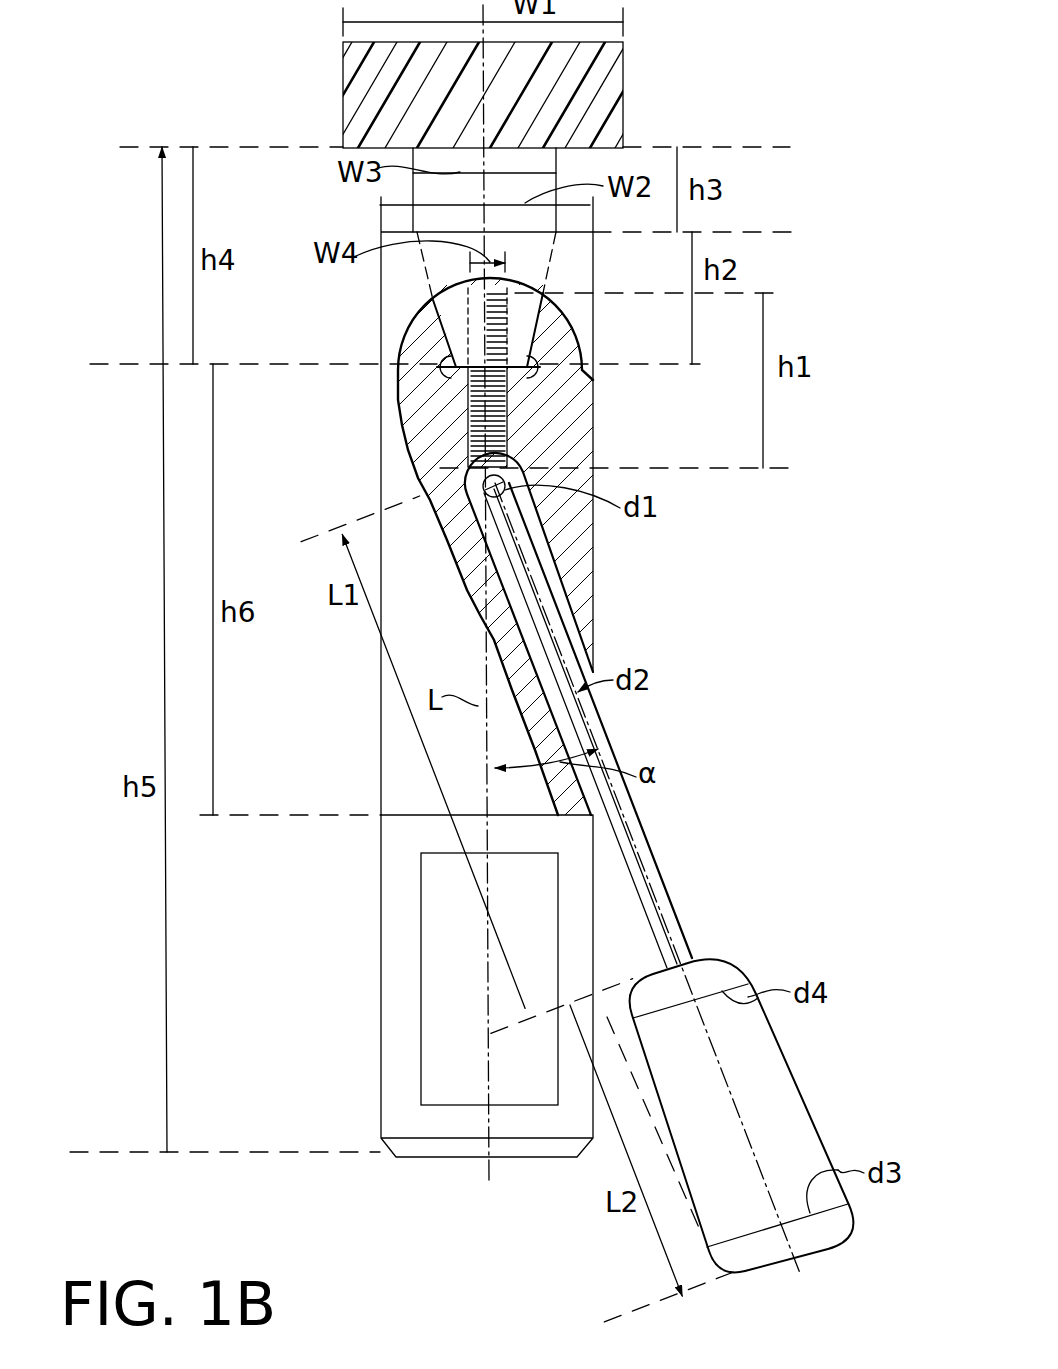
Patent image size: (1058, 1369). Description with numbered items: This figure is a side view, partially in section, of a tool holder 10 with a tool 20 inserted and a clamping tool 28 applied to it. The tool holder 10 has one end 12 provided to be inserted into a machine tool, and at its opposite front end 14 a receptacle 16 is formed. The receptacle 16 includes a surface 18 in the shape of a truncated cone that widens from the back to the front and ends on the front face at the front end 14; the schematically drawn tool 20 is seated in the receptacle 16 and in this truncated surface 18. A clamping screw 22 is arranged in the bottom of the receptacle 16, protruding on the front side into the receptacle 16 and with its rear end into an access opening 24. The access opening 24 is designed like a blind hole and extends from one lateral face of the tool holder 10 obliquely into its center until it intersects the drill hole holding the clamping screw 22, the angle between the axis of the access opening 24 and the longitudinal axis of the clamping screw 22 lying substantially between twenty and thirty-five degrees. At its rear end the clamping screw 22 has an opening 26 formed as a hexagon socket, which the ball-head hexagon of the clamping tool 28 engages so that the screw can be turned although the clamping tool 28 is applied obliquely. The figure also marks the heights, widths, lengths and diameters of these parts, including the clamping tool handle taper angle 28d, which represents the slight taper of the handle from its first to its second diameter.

The tool holder 10 is at (378, 742).
The one end 12 is at (440, 1043).
The front end 14 is at (583, 262).
The receptacle 16 is at (535, 392).
The truncated cone surface 18 is at (430, 313).
The tool 20 is at (605, 100).
The clamping screw 22 is at (478, 425).
The access opening 24 is at (565, 598).
The opening formed as a hexagon socket 26 is at (513, 455).
The clamping tool 28 is at (650, 880).
The clamping tool handle taper angle 28d is at (636, 1056).